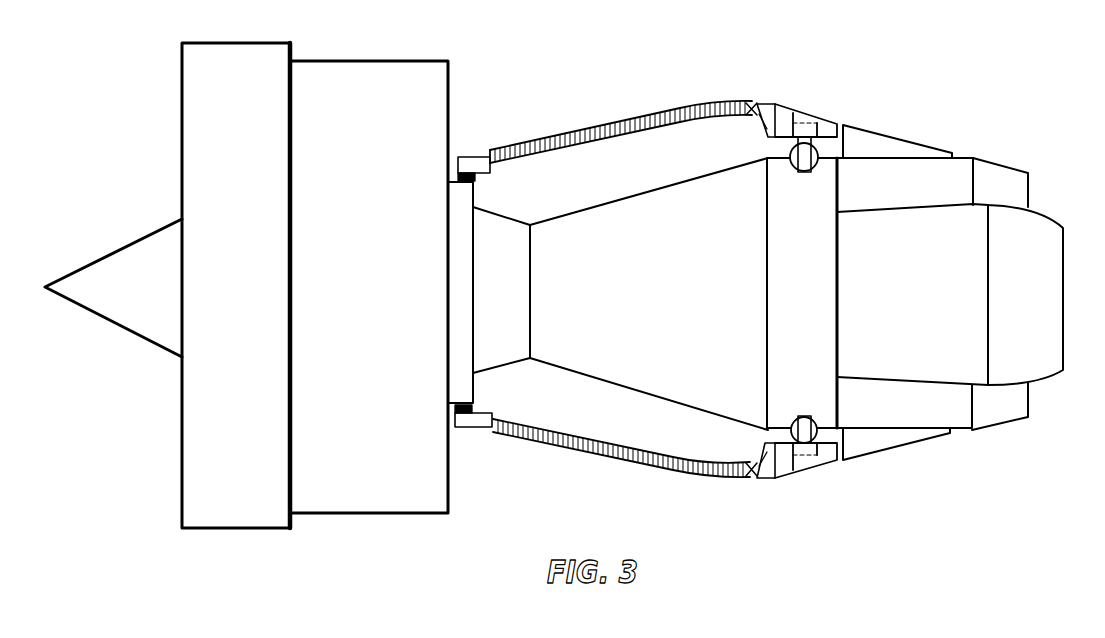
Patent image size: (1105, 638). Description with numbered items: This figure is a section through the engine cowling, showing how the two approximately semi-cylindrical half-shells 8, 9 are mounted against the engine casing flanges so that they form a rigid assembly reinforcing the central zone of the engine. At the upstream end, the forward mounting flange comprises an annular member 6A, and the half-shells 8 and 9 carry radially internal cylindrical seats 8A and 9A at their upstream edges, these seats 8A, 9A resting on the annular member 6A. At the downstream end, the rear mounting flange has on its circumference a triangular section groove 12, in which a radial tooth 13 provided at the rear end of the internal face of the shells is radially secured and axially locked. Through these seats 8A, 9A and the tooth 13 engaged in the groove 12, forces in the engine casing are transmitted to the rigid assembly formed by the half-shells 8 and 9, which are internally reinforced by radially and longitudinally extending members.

The annular member 6A is at (457, 284).
The half-shell 8 is at (580, 447).
The cylindrical seat 8A is at (478, 427).
The half-shell 9 is at (555, 148).
The cylindrical seat 9A is at (474, 157).
The triangular section groove 12 is at (763, 130).
The radial tooth 13 is at (758, 102).